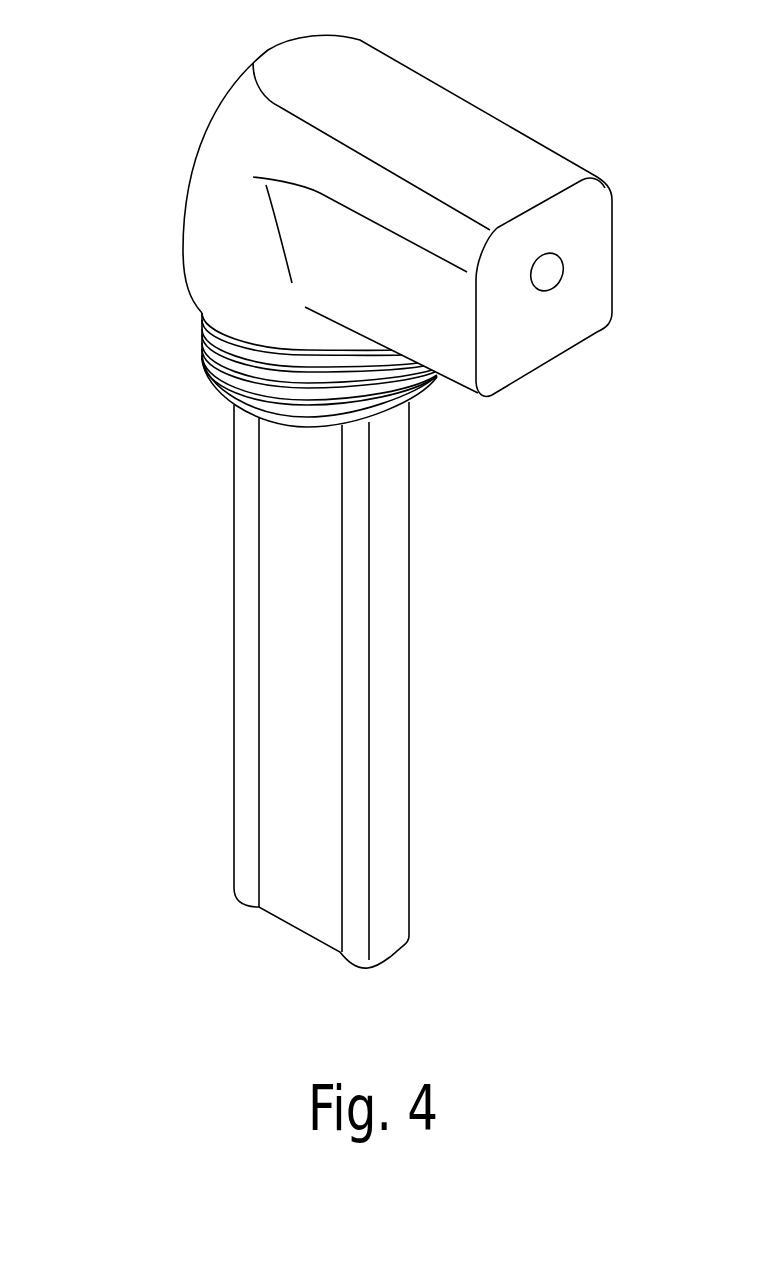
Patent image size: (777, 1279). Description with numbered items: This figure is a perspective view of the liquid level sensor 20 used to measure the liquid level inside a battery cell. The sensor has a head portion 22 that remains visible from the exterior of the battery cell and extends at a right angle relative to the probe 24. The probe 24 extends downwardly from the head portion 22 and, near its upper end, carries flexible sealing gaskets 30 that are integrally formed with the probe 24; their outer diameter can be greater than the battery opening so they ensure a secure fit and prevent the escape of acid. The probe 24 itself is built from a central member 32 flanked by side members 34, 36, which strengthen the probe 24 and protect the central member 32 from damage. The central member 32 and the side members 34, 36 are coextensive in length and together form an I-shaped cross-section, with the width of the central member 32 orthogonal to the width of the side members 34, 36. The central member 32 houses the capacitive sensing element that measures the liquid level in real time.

The liquid level sensor 20 is at (176, 95).
The head portion 22 is at (400, 90).
The probe 24 is at (407, 497).
The flexible sealing gaskets 30 is at (188, 300).
The central member 32 is at (290, 873).
The side member 34 is at (396, 698).
The side member 36 is at (234, 621).